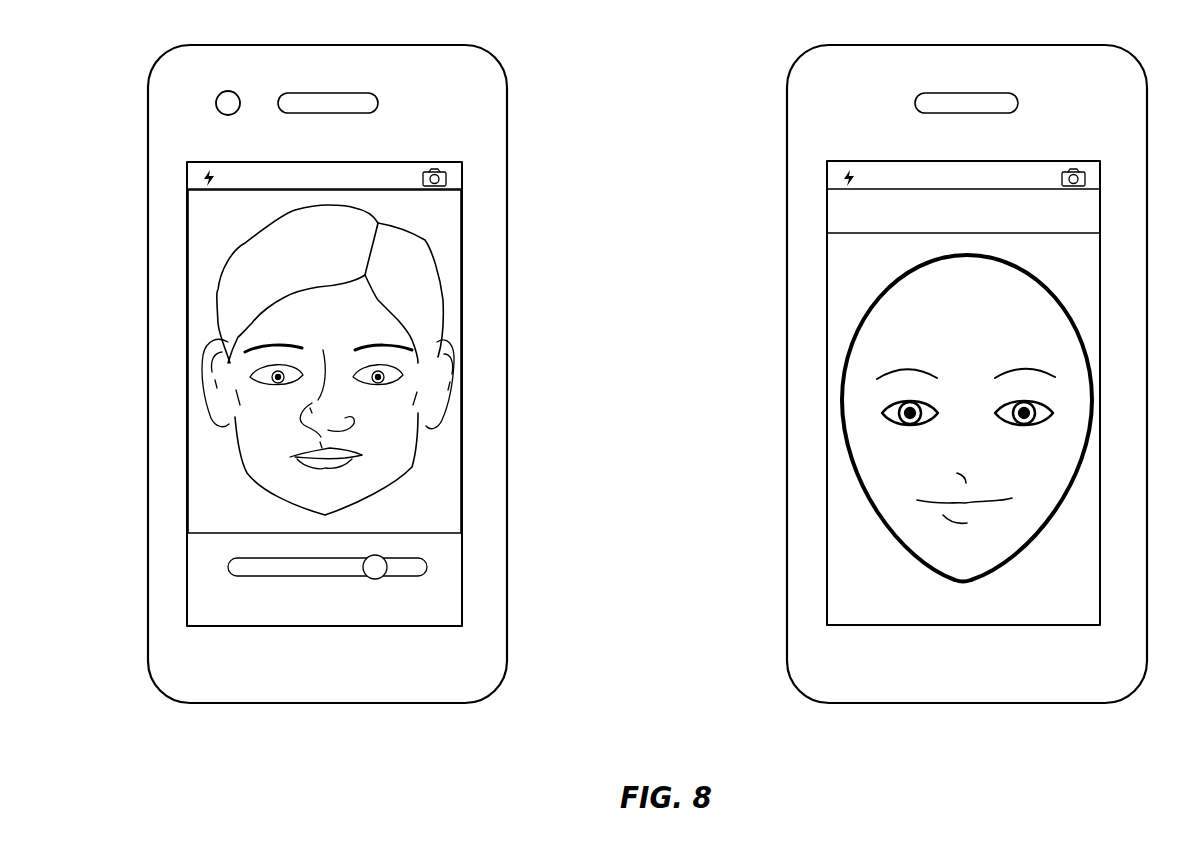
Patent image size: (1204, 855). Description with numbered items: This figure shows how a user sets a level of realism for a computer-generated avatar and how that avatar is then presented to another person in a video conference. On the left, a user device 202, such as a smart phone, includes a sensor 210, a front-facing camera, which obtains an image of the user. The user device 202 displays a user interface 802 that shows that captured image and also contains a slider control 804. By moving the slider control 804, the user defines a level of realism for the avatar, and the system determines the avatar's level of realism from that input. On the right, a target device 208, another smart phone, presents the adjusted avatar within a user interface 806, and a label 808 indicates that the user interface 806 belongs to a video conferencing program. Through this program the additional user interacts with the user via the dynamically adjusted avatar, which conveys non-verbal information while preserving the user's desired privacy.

The user device 202 is at (148, 115).
The sensor 210 is at (217, 92).
The user interface 802 is at (187, 357).
The slider control 804 is at (187, 580).
The target device 208 is at (787, 115).
The label 808 is at (827, 212).
The user interface 806 is at (827, 415).